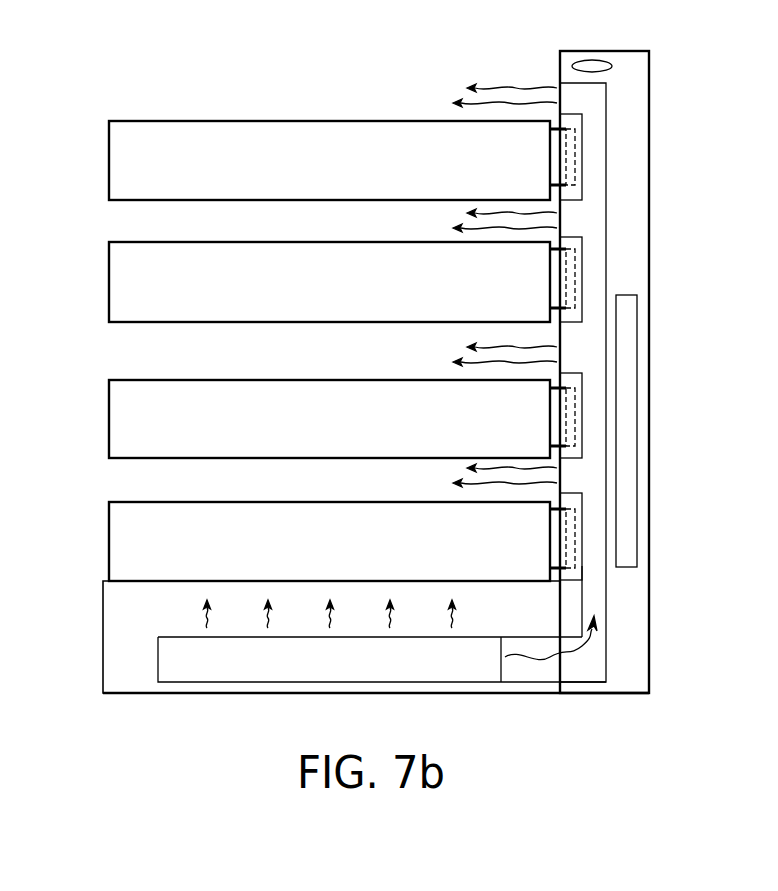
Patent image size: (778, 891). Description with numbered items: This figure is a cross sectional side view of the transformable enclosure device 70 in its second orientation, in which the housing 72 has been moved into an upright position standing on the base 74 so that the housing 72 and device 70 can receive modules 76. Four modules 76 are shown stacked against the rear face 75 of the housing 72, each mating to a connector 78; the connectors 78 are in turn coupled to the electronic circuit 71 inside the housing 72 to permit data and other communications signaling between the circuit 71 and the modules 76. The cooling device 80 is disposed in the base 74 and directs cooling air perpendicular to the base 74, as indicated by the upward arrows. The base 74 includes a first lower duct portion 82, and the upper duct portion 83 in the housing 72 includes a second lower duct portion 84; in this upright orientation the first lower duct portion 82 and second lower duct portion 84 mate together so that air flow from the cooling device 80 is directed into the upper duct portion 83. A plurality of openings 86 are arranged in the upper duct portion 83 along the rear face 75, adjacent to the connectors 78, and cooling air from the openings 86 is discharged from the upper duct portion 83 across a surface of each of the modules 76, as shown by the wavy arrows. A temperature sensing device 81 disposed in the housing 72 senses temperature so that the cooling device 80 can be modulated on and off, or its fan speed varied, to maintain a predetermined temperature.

The device 70 is at (91, 711).
The electronic circuit 71 is at (637, 317).
The housing 72 is at (632, 60).
The base 74 is at (113, 607).
The rear face 75 is at (549, 66).
The modules 76 is at (119, 136).
The connectors 78 is at (575, 157).
The cooling device 80 is at (458, 675).
The temperature sensing device 81 is at (590, 60).
The first lower duct portion 82 is at (531, 675).
The upper duct portion 83 is at (595, 252).
The second lower duct portion 84 is at (584, 675).
The openings 86 is at (566, 90).